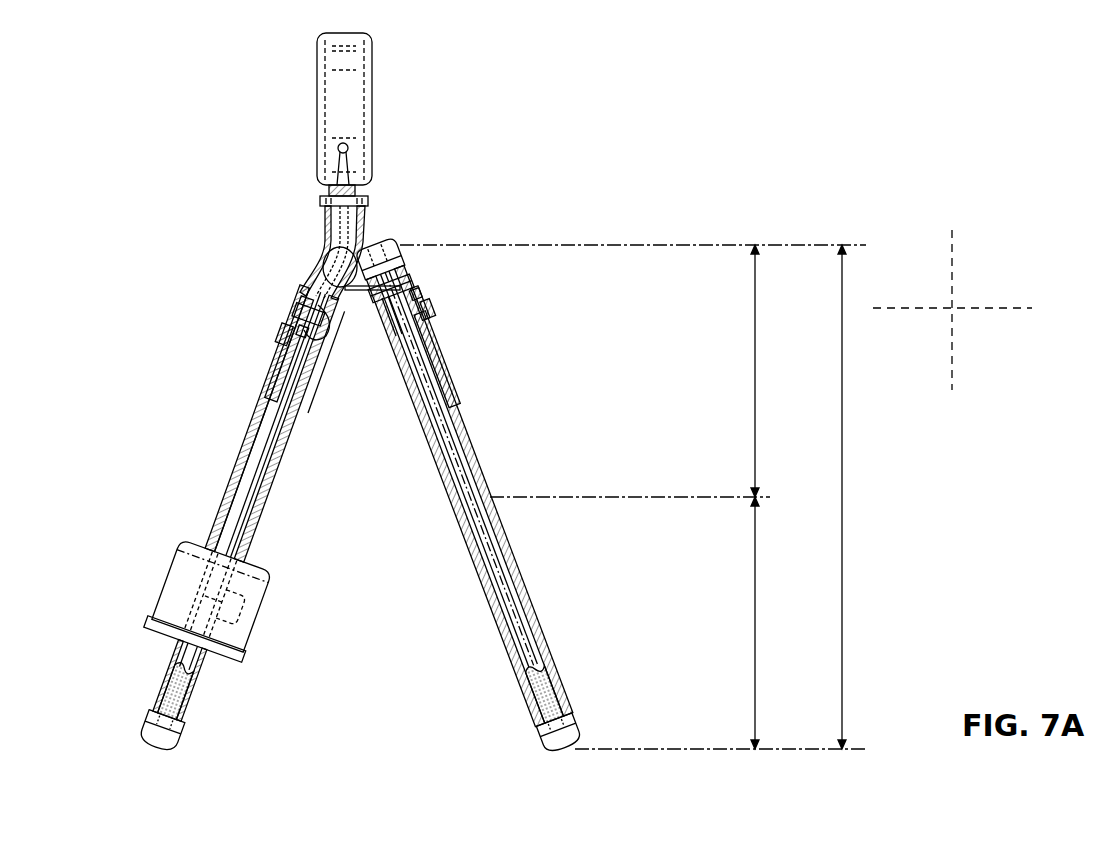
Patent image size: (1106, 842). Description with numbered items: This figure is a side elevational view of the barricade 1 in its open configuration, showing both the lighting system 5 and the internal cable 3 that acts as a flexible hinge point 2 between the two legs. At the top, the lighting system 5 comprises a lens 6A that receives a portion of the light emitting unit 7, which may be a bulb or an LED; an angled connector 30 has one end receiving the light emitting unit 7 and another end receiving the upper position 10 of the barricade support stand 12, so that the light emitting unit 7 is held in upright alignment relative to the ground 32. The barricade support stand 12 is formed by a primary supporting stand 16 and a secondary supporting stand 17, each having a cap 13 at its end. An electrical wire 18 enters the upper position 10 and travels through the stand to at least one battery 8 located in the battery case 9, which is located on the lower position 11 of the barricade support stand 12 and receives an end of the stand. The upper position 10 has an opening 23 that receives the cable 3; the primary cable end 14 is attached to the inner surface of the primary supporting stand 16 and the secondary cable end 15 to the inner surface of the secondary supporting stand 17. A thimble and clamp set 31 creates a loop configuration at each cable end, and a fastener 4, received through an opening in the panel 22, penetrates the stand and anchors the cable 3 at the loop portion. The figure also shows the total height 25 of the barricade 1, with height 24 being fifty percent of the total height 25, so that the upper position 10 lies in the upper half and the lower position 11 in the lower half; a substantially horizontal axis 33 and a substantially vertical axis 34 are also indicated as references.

The barricade 1 is at (244, 236).
The flexible hinge point 2 is at (367, 312).
The internal cable 3 is at (366, 272).
The fastener 4 is at (290, 306).
The lighting system 5 is at (290, 144).
The lens 6A is at (357, 102).
The light emitting unit 7 is at (350, 160).
The battery 8 is at (262, 552).
The battery case 9 is at (180, 540).
The upper position 10 is at (316, 290).
The lower position 11 is at (530, 650).
The barricade support stand 12 is at (250, 446).
The cap 13 is at (390, 246).
The primary cable end 14 is at (318, 328).
The secondary cable end 15 is at (390, 325).
The primary supporting stand 16 is at (280, 480).
The secondary supporting stand 17 is at (460, 405).
The electrical wire 18 is at (330, 256).
The panel 22 is at (270, 378).
The opening 23 is at (330, 266).
The height 24 is at (776, 497).
The total height 25 is at (844, 492).
The connector 30 is at (364, 216).
The thimble and clamp set 31 is at (300, 300).
The ground 32 is at (684, 746).
The substantially horizontal axis 33 is at (988, 308).
The substantially vertical axis 34 is at (948, 262).